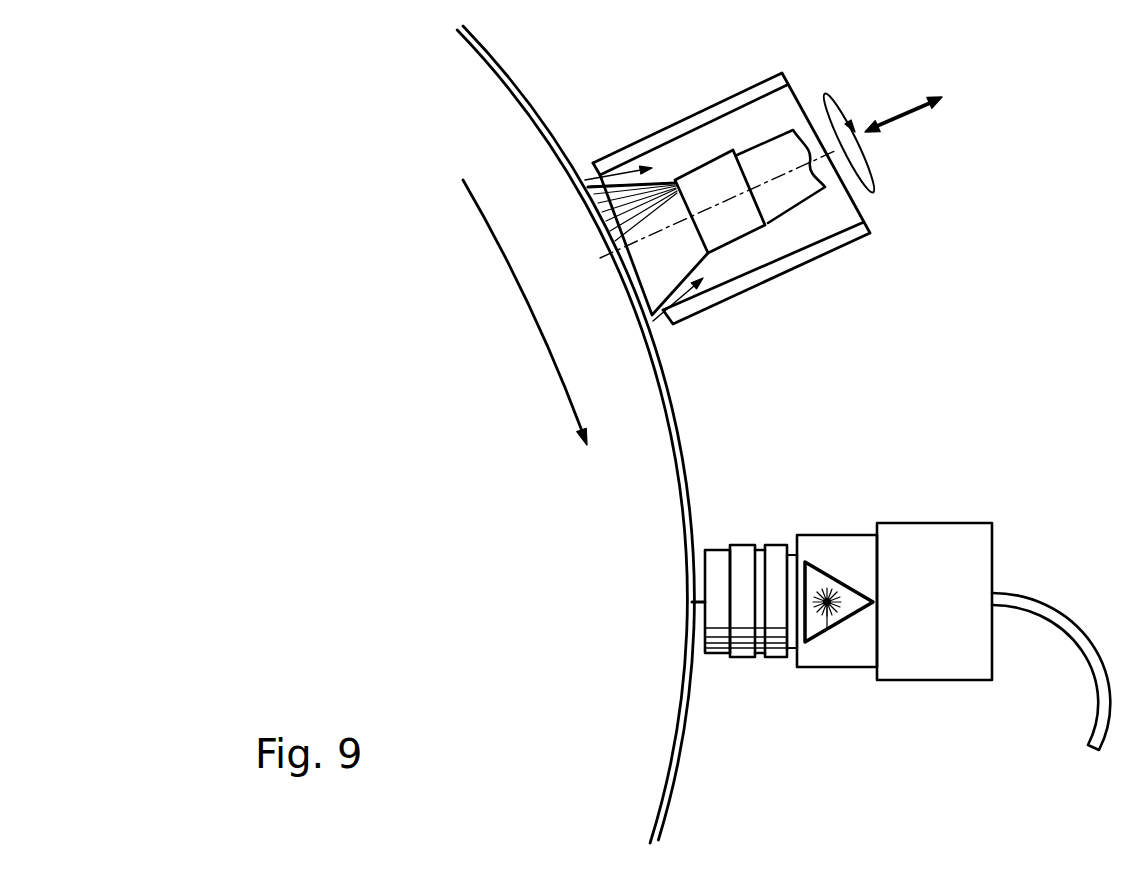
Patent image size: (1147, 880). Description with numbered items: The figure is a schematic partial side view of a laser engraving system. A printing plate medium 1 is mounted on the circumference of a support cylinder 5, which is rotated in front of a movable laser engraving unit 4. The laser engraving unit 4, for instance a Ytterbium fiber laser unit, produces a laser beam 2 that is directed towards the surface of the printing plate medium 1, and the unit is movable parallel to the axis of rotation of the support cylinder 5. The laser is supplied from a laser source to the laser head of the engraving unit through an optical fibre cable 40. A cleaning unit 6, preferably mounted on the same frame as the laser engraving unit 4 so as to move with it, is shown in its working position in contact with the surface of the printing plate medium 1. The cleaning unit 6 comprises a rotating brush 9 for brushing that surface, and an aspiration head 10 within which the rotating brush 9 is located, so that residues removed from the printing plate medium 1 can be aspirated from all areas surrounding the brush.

The printing plate medium 1 is at (517, 90).
The laser beam 2 is at (700, 603).
The laser engraving unit 4 is at (830, 658).
The support cylinder 5 is at (529, 528).
The cleaning unit 6 is at (880, 226).
The rotating brush 9 is at (705, 178).
The aspiration head 10 is at (735, 97).
The optical fibre cable 40 is at (1092, 636).